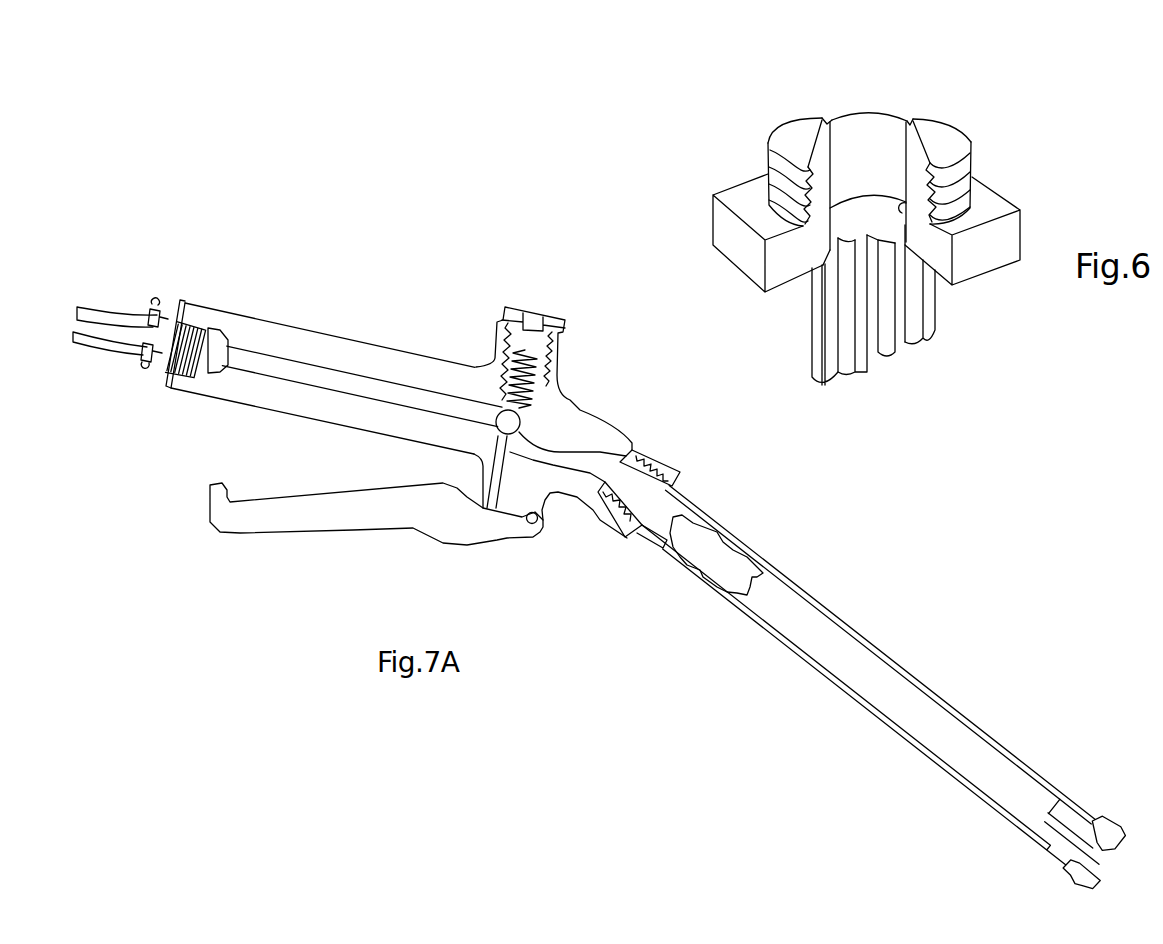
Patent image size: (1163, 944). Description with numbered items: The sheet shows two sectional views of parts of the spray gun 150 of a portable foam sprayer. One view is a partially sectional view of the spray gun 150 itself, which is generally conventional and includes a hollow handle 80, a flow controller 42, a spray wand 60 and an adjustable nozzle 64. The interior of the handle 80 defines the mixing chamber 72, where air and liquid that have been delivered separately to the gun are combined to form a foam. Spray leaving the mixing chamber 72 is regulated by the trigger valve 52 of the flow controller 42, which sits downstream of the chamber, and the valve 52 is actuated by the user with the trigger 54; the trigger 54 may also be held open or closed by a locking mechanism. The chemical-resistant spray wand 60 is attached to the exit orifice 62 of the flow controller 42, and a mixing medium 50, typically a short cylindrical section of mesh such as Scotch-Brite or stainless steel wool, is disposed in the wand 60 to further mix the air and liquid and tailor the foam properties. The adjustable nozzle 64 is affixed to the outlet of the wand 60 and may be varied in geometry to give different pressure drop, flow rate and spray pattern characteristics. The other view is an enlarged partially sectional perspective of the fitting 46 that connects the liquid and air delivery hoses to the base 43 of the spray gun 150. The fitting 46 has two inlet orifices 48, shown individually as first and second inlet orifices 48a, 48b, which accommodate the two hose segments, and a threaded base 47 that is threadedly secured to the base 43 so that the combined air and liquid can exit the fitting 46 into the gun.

In FIG. 7A, the spray gun 150 is at (546, 180).
In FIG. 7A, the handle 80 is at (368, 342).
In FIG. 7A, the base 43 is at (252, 406).
In FIG. 7A, the fitting 46 is at (169, 388).
In FIG. 6, the fitting 46 is at (997, 346).
In FIG. 7A, the threaded base 47 is at (213, 330).
In FIG. 6, the threaded base 47 is at (772, 158).
In FIG. 7A, the mixing chamber 72 is at (281, 360).
In FIG. 7A, the trigger valve 52 is at (540, 362).
In FIG. 7A, the trigger 54 is at (290, 534).
In FIG. 7A, the flow controller 42 is at (508, 538).
In FIG. 7A, the exit orifice 62 is at (655, 454).
In FIG. 7A, the mixing medium 50 is at (749, 553).
In FIG. 7A, the spray wand 60 is at (923, 686).
In FIG. 7A, the adjustable nozzle 64 is at (1109, 826).
In FIG. 6, the inlet orifices 48 is at (859, 136).
In FIG. 6, the first inlet orifice 48a is at (845, 368).
In FIG. 6, the second inlet orifice 48b is at (913, 333).